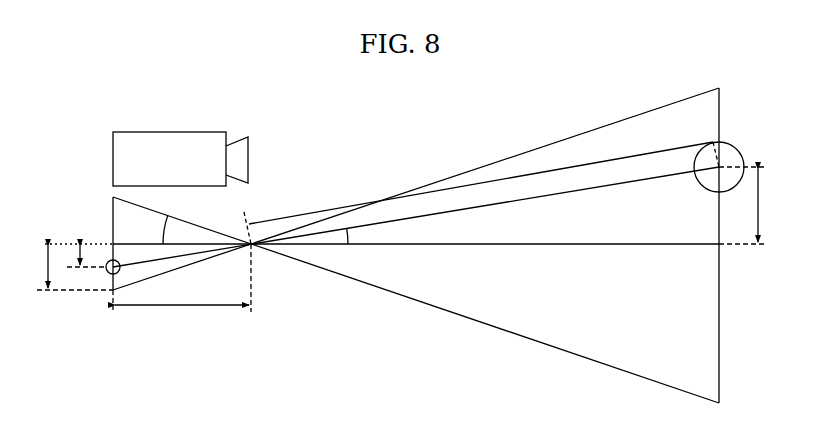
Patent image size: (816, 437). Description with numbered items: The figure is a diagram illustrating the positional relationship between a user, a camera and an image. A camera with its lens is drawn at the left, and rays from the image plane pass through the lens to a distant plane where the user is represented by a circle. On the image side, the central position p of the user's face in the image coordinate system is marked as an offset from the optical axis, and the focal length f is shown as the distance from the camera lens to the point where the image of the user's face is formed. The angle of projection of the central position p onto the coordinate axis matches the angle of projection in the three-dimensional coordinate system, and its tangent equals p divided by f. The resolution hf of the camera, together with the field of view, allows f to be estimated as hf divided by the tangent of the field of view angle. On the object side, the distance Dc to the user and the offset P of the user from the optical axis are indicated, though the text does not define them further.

The distance from lens to object center Dc is at (416, 204).
The resolution of the camera hf is at (75, 258).
The central position of the user's face p is at (86, 256).
The focal length f is at (182, 295).
The object height above optical axis P is at (744, 205).